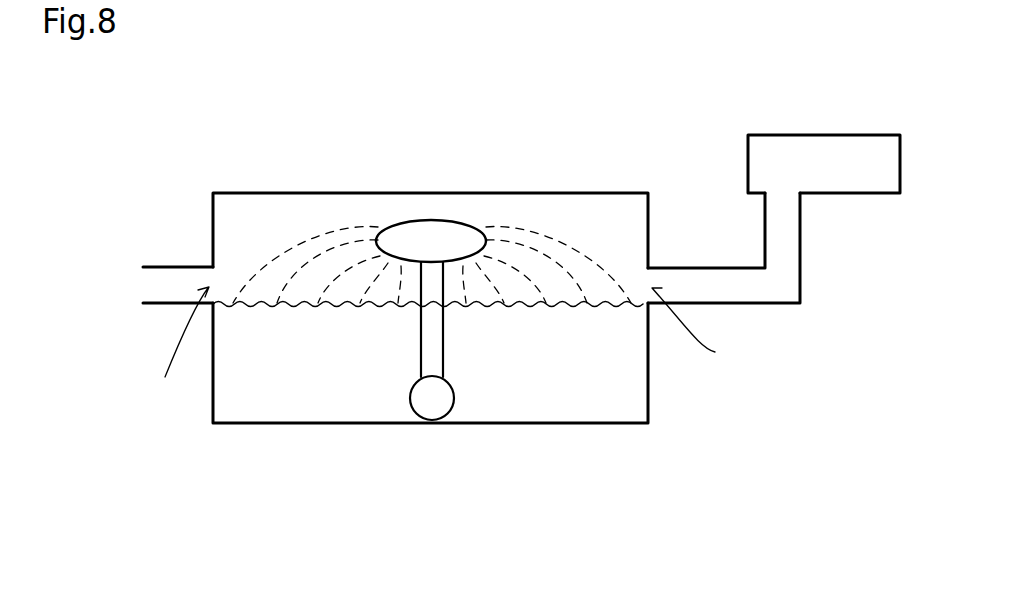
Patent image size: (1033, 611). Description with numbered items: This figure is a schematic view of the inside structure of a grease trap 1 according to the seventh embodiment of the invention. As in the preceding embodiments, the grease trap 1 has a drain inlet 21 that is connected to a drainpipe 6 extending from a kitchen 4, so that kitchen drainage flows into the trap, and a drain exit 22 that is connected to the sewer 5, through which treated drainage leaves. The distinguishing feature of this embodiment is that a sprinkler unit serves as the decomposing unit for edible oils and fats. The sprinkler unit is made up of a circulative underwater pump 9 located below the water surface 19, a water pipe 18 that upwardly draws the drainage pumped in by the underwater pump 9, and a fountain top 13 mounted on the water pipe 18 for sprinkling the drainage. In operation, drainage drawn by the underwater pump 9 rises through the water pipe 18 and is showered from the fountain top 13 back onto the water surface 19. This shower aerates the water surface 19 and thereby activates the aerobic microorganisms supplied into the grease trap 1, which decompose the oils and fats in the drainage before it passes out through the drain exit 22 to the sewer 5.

The grease trap 1 is at (638, 181).
The kitchen 4 is at (815, 148).
The sewer 5 is at (150, 287).
The drainpipe 6 is at (695, 275).
The circulative underwater pump 9 is at (433, 410).
The fountain top 13 is at (424, 230).
The water pipe 18 is at (443, 353).
The water surface 19 is at (552, 308).
The drain inlet 21 is at (705, 328).
The drain exit 22 is at (177, 353).